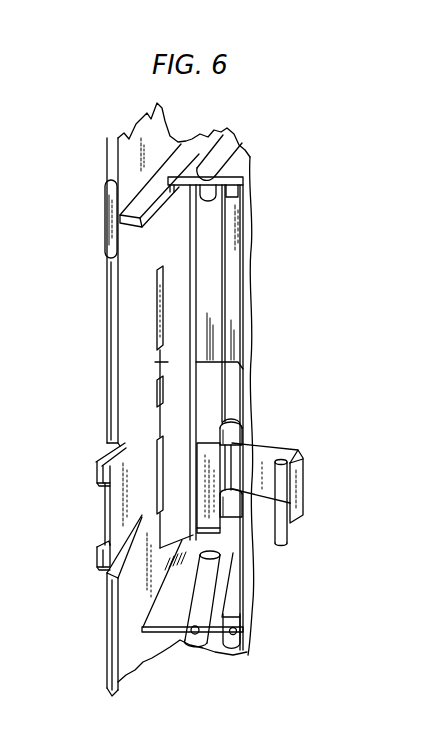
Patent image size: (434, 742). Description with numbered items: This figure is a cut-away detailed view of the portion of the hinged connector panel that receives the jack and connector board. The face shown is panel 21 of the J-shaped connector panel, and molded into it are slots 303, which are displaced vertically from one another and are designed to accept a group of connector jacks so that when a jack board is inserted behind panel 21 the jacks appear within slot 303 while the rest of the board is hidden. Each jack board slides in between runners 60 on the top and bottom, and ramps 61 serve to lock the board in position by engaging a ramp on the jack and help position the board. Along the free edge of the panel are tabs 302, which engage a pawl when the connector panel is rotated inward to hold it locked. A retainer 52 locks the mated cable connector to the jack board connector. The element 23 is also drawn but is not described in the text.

The panel 21 is at (122, 347).
The clip 23 is at (118, 505).
The retainer 52 is at (303, 497).
The runners 60 is at (240, 190).
The ramps 61 is at (162, 292).
The tabs 302 is at (105, 213).
The slots 303 is at (163, 363).